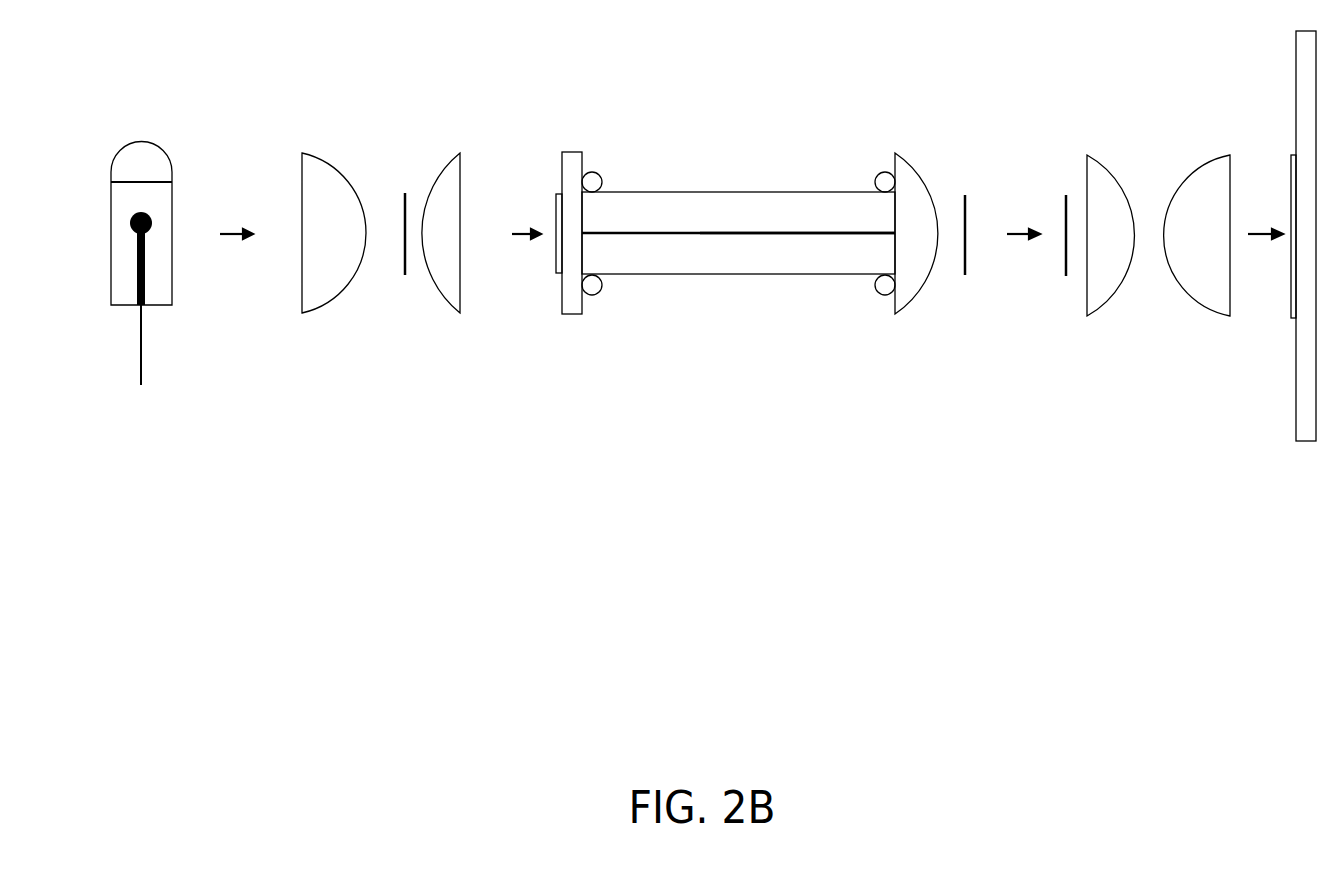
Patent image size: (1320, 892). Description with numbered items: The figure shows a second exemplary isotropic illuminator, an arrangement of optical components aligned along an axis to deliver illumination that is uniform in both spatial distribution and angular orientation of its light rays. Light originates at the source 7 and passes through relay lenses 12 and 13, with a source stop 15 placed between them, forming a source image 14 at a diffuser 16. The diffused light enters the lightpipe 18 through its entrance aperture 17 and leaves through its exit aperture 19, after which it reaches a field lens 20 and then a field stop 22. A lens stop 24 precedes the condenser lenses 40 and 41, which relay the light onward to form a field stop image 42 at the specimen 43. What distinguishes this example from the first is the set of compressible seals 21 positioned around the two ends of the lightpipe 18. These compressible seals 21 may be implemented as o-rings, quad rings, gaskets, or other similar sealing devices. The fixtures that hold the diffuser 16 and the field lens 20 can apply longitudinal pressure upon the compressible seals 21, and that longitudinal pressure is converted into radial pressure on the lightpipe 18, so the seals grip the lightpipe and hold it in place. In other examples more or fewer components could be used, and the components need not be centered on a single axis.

The source 7 is at (141, 141).
The relay lens 12 is at (311, 315).
The relay lens 13 is at (455, 315).
The source image 14 is at (555, 263).
The source stop 15 is at (405, 274).
The diffuser 16 is at (566, 316).
The entrance aperture 17 is at (583, 208).
The lightpipe 18 is at (737, 277).
The exit aperture 19 is at (893, 213).
The field lens 20 is at (912, 316).
The compressible seals 21 is at (599, 177).
The field stop 22 is at (965, 193).
The lens stop 24 is at (1065, 270).
The condenser lens 40 is at (1100, 316).
The condenser lens 41 is at (1205, 314).
The field stop image 42 is at (1288, 296).
The specimen 43 is at (1300, 443).